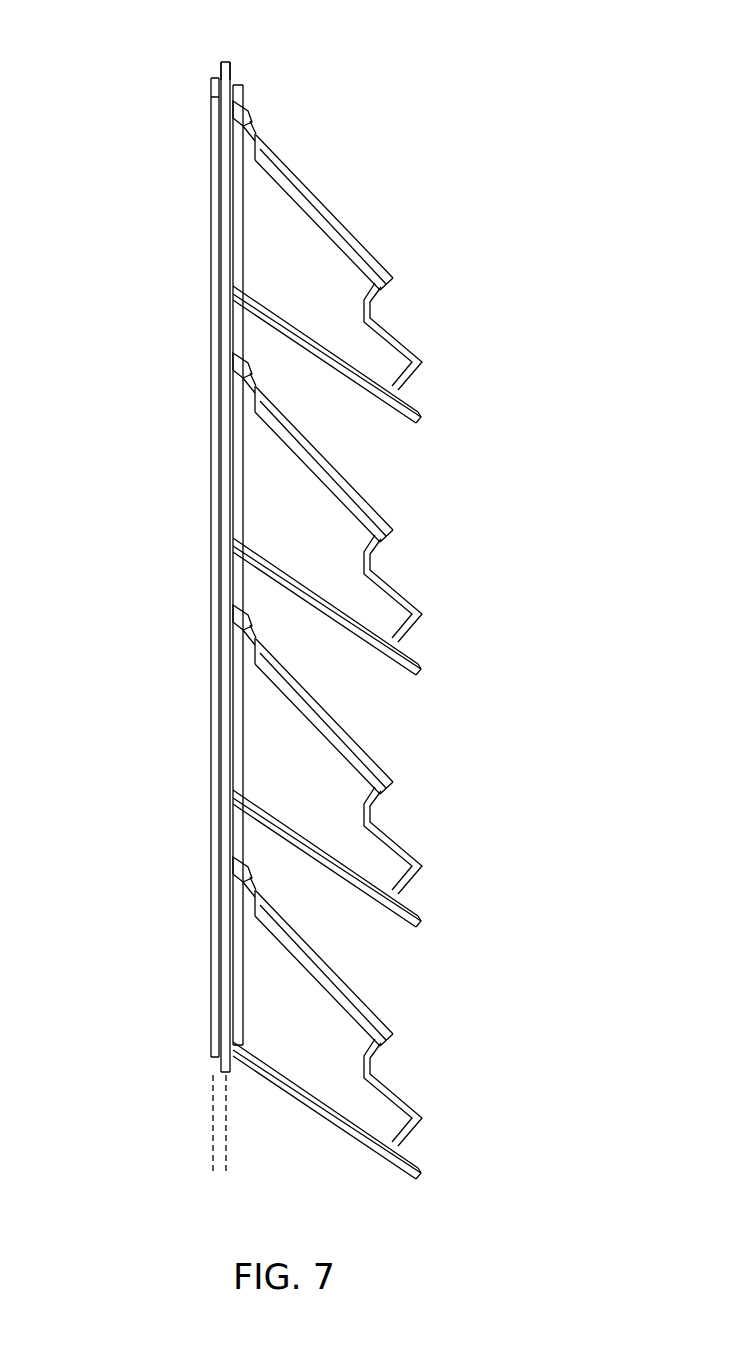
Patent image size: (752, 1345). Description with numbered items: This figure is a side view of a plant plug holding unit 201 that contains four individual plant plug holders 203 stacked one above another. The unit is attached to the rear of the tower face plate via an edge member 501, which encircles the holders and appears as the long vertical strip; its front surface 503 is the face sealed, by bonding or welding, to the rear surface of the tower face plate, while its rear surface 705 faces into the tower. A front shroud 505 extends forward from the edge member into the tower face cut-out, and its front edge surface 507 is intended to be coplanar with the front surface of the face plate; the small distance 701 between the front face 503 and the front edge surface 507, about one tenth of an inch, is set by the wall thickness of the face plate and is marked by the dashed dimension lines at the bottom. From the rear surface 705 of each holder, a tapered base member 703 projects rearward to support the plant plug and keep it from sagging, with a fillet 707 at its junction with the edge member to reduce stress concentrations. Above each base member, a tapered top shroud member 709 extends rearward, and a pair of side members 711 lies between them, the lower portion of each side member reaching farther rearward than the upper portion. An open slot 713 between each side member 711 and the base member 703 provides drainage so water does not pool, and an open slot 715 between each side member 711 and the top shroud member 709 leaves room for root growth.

The plant plug holding unit 201 is at (481, 188).
The individual plant plug holder 203 is at (168, 197).
The edge member 501 is at (227, 62).
The front surface of edge member 503 is at (208, 65).
The front shroud 505 is at (213, 150).
The front edge surface of front shroud 507 is at (205, 400).
The distance between front face of edge member and front surface of front shroud 701 is at (262, 1153).
The base member 703 is at (363, 1151).
The rear surface of edge member 705 is at (243, 72).
The fillet 707 is at (241, 834).
The top shroud member 709 is at (349, 993).
The side member 711 is at (324, 282).
The open slot 713 is at (420, 1163).
The open slot 715 is at (397, 1065).